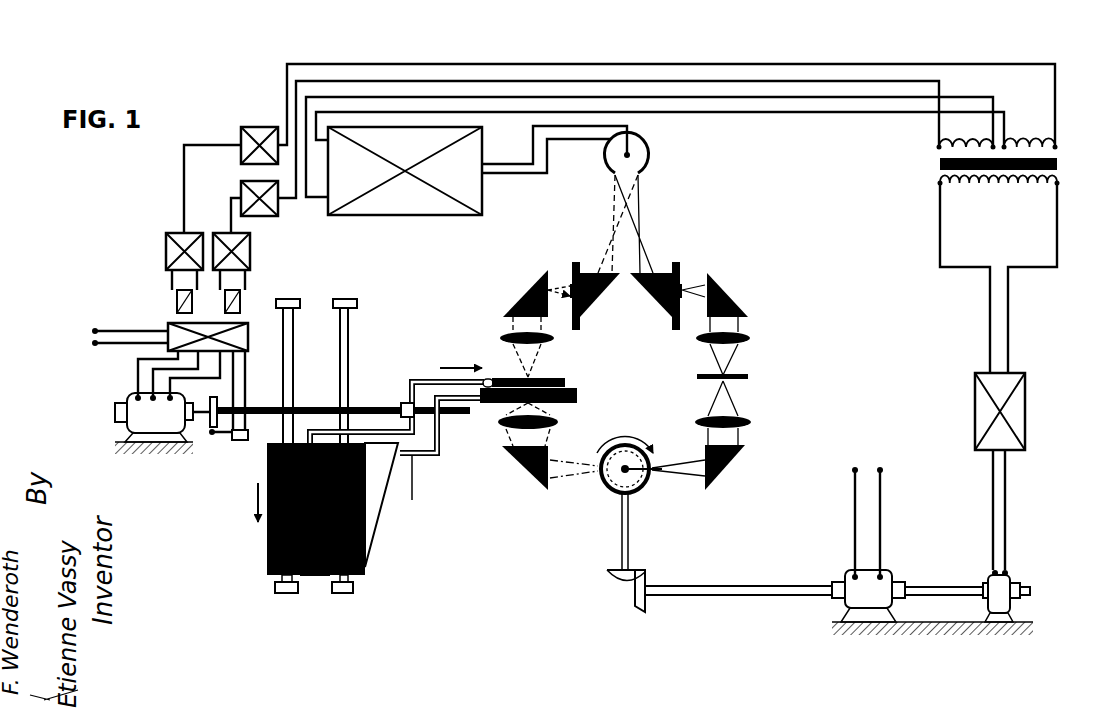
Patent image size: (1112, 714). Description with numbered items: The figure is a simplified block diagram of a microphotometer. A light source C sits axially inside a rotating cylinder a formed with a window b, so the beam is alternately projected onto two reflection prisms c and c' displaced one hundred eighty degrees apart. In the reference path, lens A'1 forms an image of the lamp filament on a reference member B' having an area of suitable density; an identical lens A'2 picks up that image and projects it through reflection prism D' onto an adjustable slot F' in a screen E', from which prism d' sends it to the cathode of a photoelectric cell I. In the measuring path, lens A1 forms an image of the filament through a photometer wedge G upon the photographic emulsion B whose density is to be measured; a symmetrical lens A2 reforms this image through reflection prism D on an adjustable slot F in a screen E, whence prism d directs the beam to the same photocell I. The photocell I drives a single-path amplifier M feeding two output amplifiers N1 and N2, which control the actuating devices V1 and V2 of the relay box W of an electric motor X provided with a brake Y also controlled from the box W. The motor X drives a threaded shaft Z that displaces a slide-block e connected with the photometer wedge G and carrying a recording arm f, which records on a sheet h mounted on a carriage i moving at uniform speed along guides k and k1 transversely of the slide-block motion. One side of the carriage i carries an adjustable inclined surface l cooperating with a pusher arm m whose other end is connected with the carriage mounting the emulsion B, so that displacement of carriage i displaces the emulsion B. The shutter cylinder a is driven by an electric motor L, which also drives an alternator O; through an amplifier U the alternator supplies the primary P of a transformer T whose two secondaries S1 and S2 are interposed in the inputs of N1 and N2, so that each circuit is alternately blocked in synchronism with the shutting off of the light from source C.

The output amplifier N2 is at (262, 140).
The output amplifier N1 is at (270, 183).
The actuating device V2 is at (182, 250).
The actuating device V1 is at (238, 255).
The single-path amplifier M is at (460, 183).
The photoelectric cell I is at (637, 153).
The relay box W is at (180, 335).
The electric motor X is at (138, 412).
The brake Y is at (212, 435).
The threaded shaft Z is at (458, 416).
The slide-block e is at (402, 403).
The pusher arm m is at (410, 485).
The sheet h is at (267, 540).
The recording arm f is at (267, 462).
The adjustable inclined surface l is at (372, 517).
The guide k is at (277, 594).
The guide k1 is at (341, 594).
The carriage i is at (315, 579).
The photographic emulsion B is at (513, 349).
The photometer wedge G is at (577, 393).
The reflection prism D is at (530, 284).
The screen E is at (563, 273).
The prism d is at (599, 265).
The adjustable slot F is at (551, 264).
The screen E' is at (688, 272).
The reflection prism d' is at (652, 263).
The adjustable slot F' is at (706, 260).
The reflection prism D' is at (740, 281).
The lens A2 is at (555, 338).
The lens A'2 is at (755, 340).
The reference member B' is at (756, 371).
The lens A1 is at (508, 424).
The lens A'1 is at (753, 413).
The reflection prism c is at (543, 478).
The reflection prism c' is at (726, 467).
The light source C is at (601, 487).
The rotating cylinder a is at (619, 477).
The window b is at (658, 476).
The electric motor L is at (881, 595).
The alternator O is at (1002, 588).
The amplifier U is at (987, 402).
The secondary S1 is at (968, 140).
The secondary S2 is at (1037, 138).
The transformer T is at (1060, 162).
The primary P is at (982, 189).